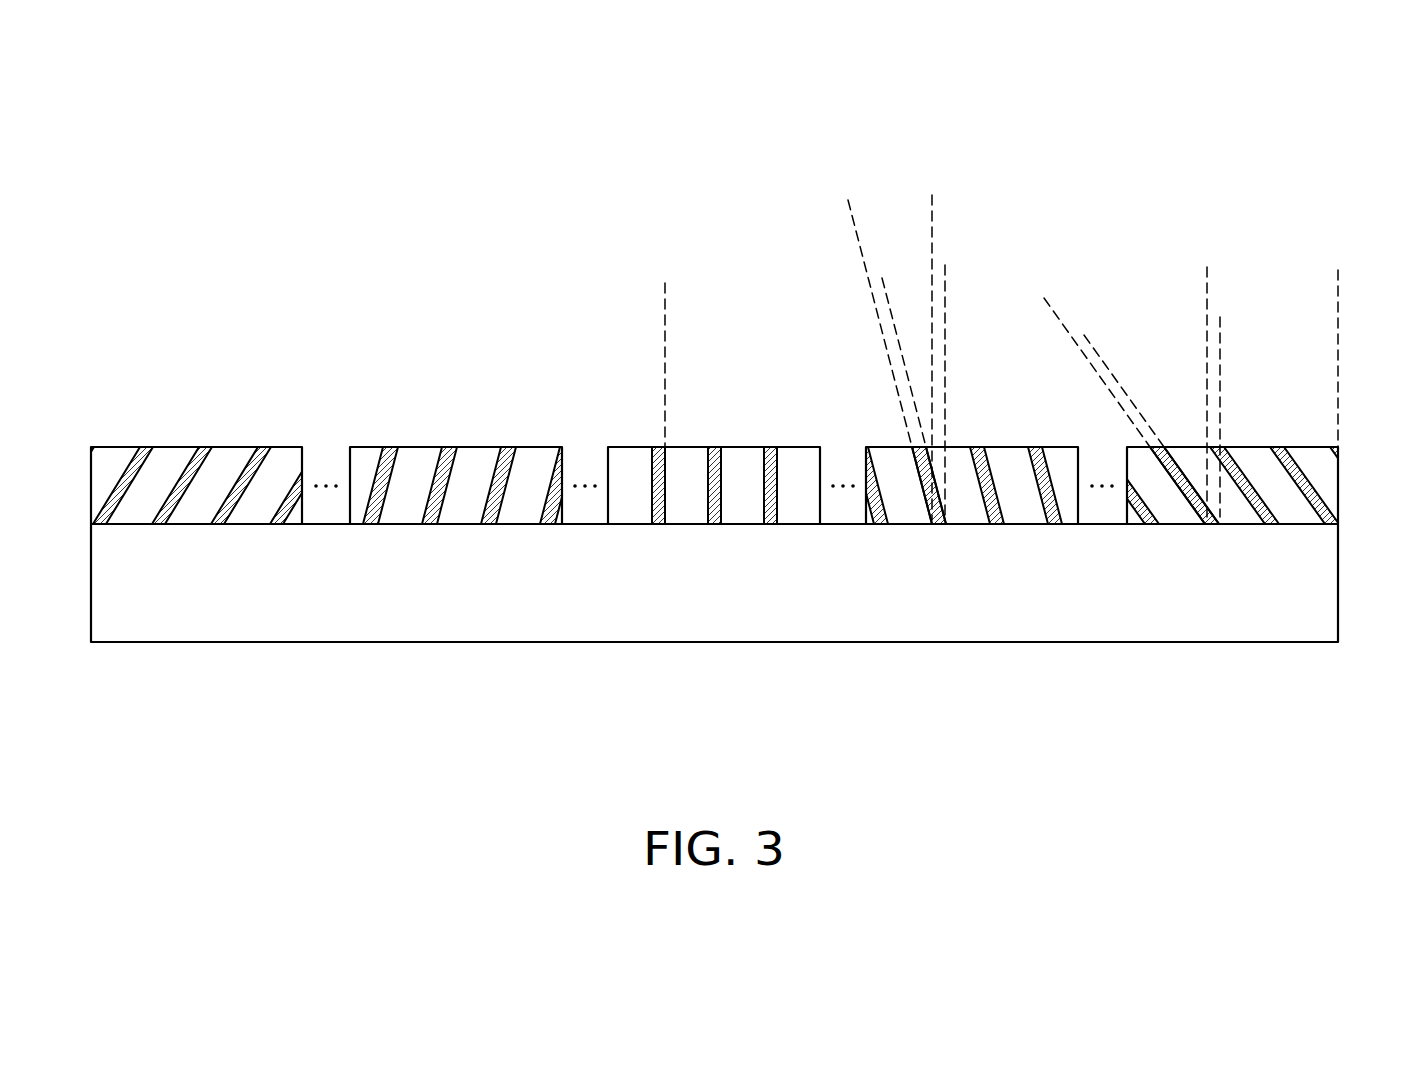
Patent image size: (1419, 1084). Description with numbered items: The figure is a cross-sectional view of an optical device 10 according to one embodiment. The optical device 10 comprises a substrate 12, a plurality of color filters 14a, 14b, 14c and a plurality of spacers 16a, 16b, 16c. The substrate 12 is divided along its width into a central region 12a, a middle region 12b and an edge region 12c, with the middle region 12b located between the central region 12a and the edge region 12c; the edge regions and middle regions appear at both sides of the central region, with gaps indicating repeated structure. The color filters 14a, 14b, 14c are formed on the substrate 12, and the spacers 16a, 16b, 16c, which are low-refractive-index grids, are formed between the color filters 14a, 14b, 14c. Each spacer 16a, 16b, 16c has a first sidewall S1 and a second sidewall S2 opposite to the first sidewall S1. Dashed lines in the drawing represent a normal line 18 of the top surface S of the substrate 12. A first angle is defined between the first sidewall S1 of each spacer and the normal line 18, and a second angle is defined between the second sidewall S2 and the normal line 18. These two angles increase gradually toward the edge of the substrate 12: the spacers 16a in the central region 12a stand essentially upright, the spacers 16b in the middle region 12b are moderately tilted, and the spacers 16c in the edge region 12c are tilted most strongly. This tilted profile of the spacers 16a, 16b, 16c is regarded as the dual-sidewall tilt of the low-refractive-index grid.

The optical device 10 is at (1343, 163).
The substrate 12 is at (1338, 275).
The central region 12a is at (715, 533).
The middle region 12b is at (704, 524).
The edge region 12c is at (716, 532).
The color filter 14a is at (692, 462).
The color filter 14b is at (365, 458).
The color filter 14c is at (115, 450).
The spacer 16a is at (658, 450).
The spacer 16b is at (387, 457).
The spacer 16c is at (142, 450).
The normal line 18 is at (665, 307).
The top surface S is at (1103, 538).
The first sidewall S1 is at (650, 479).
The second sidewall S2 is at (668, 479).